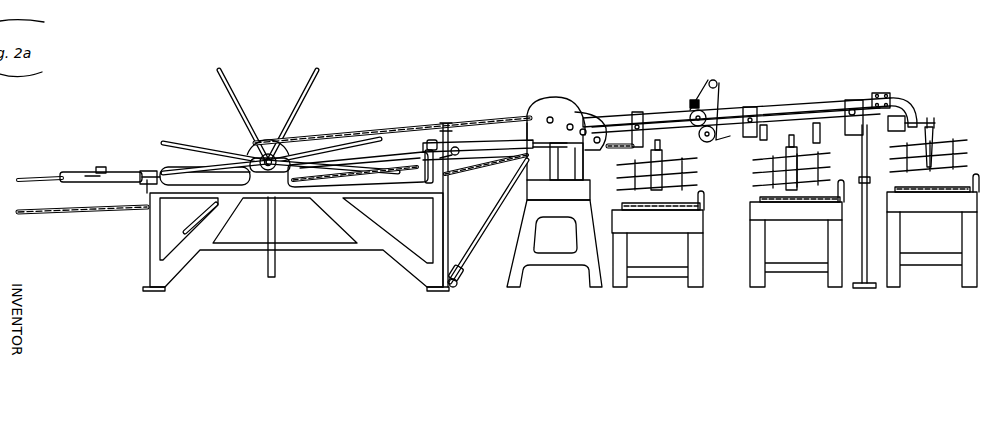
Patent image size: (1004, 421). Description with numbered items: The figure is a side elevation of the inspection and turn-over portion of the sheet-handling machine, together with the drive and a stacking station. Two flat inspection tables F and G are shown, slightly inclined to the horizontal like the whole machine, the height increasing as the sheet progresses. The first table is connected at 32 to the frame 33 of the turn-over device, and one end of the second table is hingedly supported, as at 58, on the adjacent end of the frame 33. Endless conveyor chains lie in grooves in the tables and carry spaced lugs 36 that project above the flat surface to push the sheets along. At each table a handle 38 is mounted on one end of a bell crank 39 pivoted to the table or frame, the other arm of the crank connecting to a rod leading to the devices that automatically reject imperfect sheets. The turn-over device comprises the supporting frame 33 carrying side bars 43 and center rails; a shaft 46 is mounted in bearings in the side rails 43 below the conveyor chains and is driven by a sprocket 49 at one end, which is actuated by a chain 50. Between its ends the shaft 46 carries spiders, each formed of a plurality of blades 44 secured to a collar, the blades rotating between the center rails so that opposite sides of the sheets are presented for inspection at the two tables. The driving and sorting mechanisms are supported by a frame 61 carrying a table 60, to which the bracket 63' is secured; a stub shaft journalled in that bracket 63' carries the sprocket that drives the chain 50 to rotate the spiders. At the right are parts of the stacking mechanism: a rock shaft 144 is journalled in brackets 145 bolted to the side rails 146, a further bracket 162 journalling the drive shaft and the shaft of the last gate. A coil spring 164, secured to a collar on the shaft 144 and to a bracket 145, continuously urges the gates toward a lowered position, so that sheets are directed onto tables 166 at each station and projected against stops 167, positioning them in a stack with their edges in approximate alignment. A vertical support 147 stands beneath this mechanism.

The connection 32 is at (142, 168).
The frame 33 is at (153, 245).
The lugs 36 is at (93, 210).
The handle 38 is at (100, 167).
The bell crank 39 is at (90, 182).
The side bars 43 is at (165, 168).
The blades 44 is at (216, 78).
The shaft 46 is at (266, 170).
The sprocket 49 is at (260, 137).
The chain 50 is at (325, 128).
The hinge 58 is at (453, 147).
The table 60 is at (535, 193).
The frame 61 is at (553, 262).
The bracket 63' is at (566, 114).
The rock shaft 144 is at (672, 140).
The brackets 145 is at (635, 113).
The side rails 146 is at (668, 117).
The support post 147 is at (868, 247).
The bracket 162 is at (918, 103).
The coil spring 164 is at (625, 140).
The tables 166 is at (763, 213).
The stops 167 is at (703, 196).
The first inspection table F is at (92, 140).
The second inspection table G is at (468, 140).